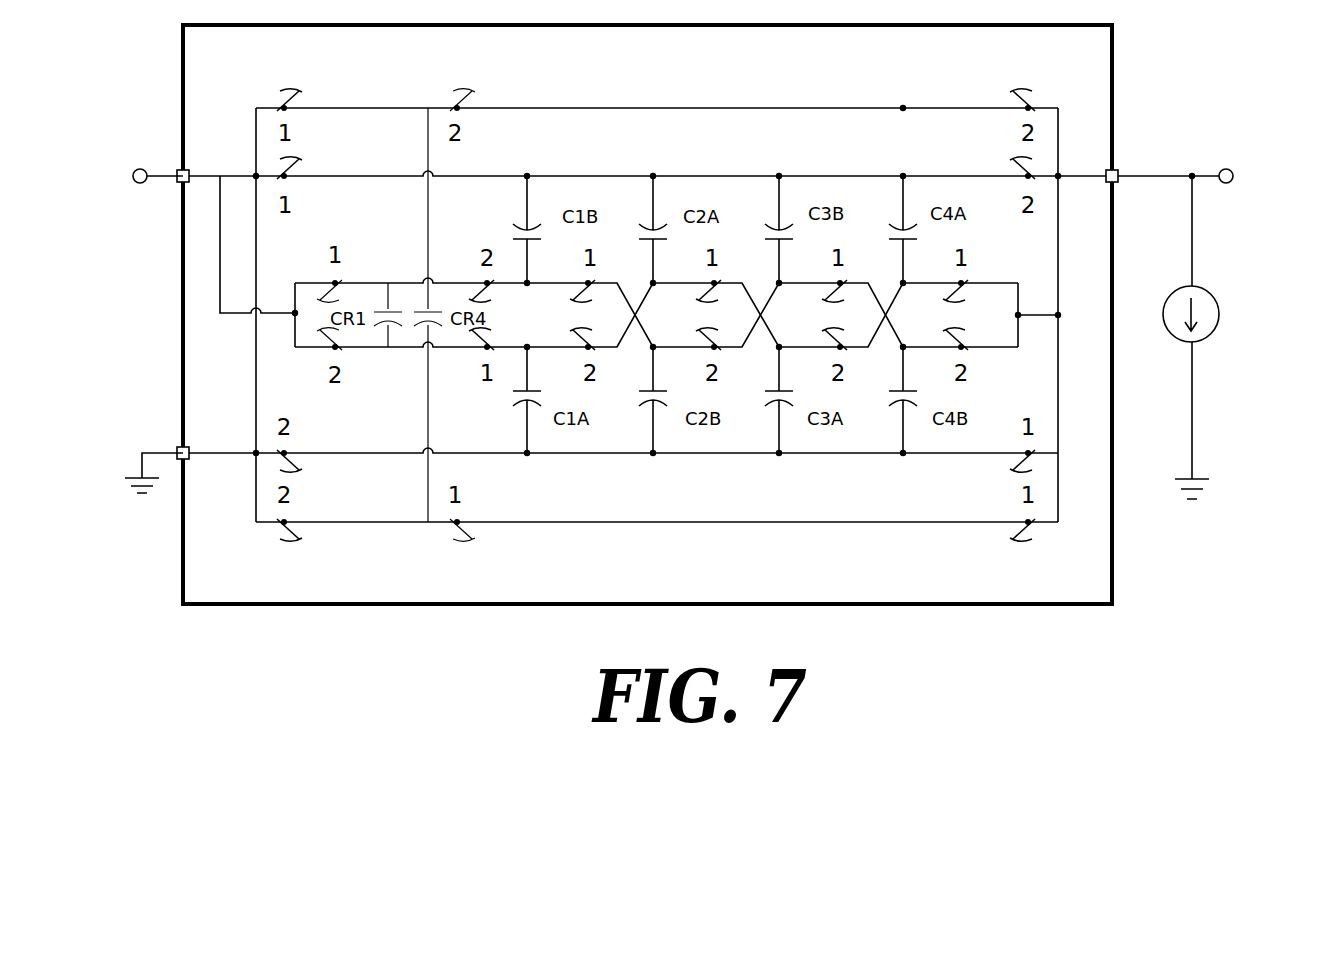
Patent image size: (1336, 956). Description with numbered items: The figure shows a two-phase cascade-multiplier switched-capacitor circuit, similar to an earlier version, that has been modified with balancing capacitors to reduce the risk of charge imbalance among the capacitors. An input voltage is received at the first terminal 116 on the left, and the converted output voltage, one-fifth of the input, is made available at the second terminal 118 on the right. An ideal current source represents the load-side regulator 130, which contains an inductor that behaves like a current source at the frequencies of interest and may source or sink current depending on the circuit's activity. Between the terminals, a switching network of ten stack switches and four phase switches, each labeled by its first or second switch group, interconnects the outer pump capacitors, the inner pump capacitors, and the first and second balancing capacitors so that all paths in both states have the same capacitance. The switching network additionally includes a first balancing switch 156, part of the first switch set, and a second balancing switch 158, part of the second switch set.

The first terminal 116 is at (133, 167).
The second terminal 118 is at (1236, 167).
The regulator 130 is at (1213, 297).
The first balancing switch 156 is at (455, 540).
The second balancing switch 158 is at (439, 91).